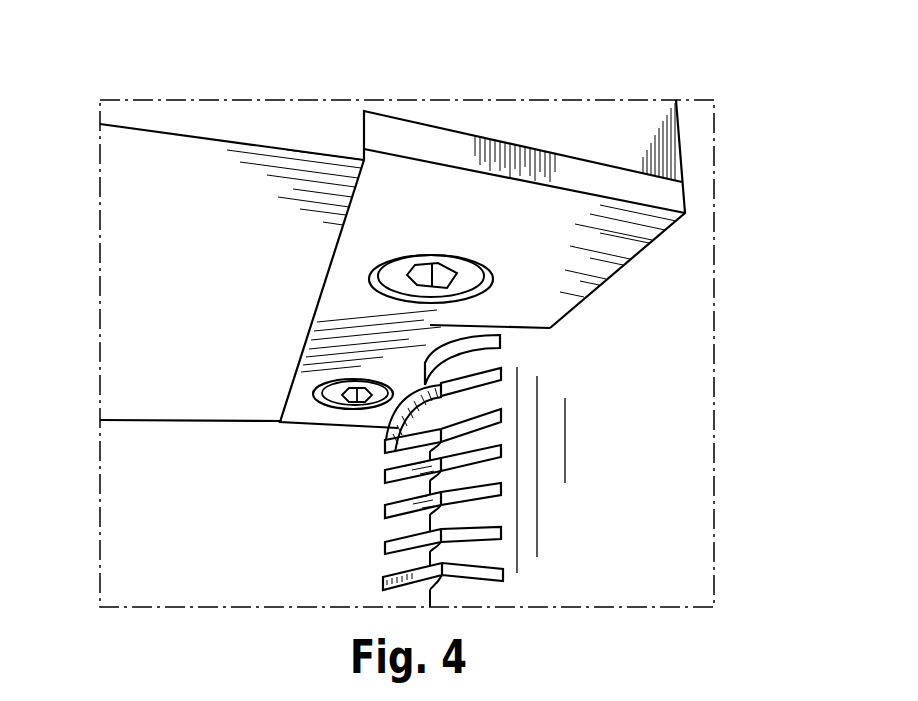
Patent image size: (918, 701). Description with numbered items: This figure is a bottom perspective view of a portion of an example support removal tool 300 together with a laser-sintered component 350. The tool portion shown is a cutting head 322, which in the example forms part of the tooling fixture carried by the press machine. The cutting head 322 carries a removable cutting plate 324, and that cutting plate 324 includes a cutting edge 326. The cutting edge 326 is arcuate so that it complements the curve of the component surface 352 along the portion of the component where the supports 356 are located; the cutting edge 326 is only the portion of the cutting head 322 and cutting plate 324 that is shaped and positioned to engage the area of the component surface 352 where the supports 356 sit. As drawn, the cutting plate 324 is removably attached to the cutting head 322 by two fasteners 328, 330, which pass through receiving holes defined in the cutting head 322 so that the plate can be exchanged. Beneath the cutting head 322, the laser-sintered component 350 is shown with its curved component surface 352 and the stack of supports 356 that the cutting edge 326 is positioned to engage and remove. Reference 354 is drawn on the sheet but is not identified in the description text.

The support removal tool 300 is at (240, 78).
The cutting head 322 is at (177, 410).
The removable cutting plate 324 is at (672, 198).
The cutting edge 326 is at (527, 328).
The fastener 328 is at (323, 413).
The fastener 330 is at (400, 256).
The laser-sintered component 350 is at (543, 498).
The component surface 352 is at (467, 593).
The body 354 is at (690, 512).
The supports 356 is at (365, 595).